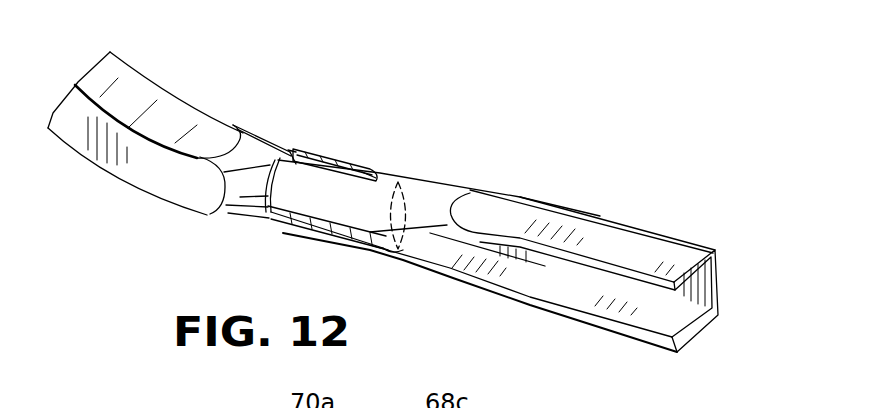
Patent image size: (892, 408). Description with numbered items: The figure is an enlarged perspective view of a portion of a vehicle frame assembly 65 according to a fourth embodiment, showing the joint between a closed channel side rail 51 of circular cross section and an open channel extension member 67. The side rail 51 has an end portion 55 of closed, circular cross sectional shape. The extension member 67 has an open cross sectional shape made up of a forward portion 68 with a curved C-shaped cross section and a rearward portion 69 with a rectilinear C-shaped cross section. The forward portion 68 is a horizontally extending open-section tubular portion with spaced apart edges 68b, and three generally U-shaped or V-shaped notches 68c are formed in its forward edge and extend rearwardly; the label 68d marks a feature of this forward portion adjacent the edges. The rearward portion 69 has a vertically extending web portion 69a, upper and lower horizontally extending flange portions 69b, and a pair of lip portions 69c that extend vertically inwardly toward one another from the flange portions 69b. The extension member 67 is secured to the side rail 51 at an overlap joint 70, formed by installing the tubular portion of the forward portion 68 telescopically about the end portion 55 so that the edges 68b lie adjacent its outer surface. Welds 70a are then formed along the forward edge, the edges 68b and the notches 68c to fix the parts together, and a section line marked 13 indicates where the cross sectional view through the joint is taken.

The side rail 51 is at (128, 84).
The end portion 55 is at (240, 197).
The vehicle frame assembly 65 is at (497, 142).
The extension member 67 is at (547, 197).
The forward portion 68 is at (403, 168).
The spaced apart edges 68b is at (250, 208).
The notches 68c is at (352, 170).
The upper tab edge 68d is at (290, 157).
The rearward portion 69 is at (625, 210).
The web portion 69a is at (719, 286).
The flange portions 69b is at (648, 252).
The lip portions 69c is at (663, 340).
The overlap joint 70 is at (345, 150).
The welds 70a is at (285, 182).
The section line for FIG. 13 is at (283, 95).